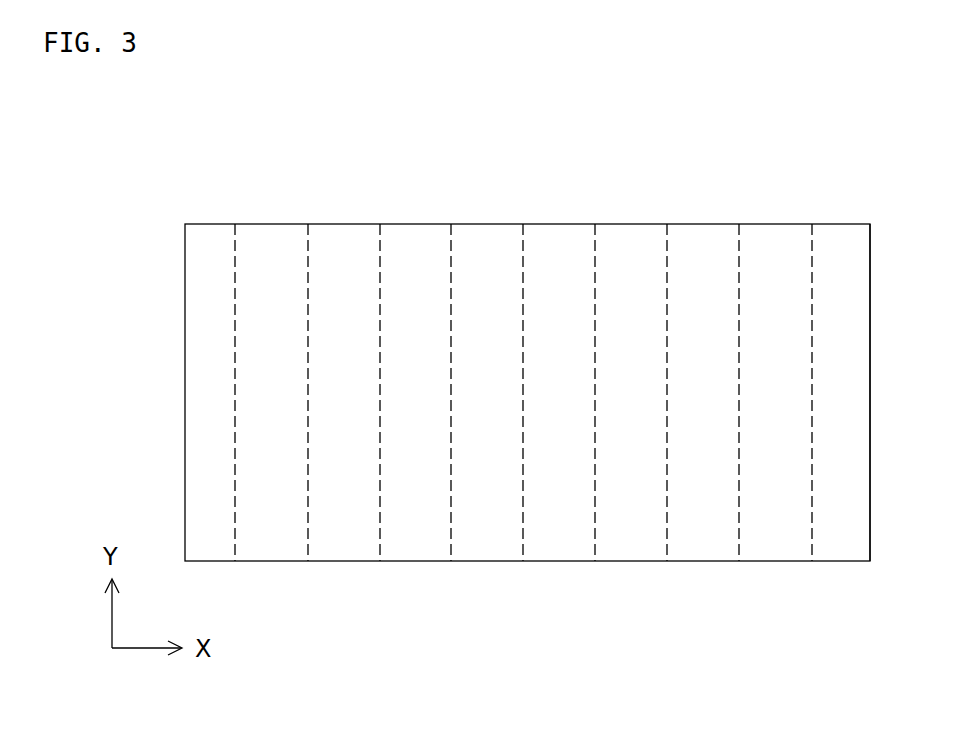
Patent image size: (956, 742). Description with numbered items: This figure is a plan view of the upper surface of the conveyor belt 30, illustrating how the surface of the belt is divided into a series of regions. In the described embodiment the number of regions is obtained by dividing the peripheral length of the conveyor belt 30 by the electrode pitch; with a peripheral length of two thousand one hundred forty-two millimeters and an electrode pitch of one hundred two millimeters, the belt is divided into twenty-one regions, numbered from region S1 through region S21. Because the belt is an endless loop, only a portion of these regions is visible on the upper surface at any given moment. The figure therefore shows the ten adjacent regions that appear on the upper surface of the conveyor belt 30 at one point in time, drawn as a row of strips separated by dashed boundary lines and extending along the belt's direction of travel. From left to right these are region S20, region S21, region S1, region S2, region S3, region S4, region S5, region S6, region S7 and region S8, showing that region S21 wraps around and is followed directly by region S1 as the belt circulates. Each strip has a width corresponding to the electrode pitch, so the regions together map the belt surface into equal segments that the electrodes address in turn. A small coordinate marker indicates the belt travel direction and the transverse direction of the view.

The conveyor belt 30 is at (649, 222).
The region S20 is at (210, 392).
The region S21 is at (278, 392).
The region S1 is at (353, 392).
The region S2 is at (425, 392).
The region S3 is at (497, 392).
The region S4 is at (569, 392).
The region S5 is at (641, 392).
The region S6 is at (713, 392).
The region S7 is at (785, 392).
The region S8 is at (847, 392).